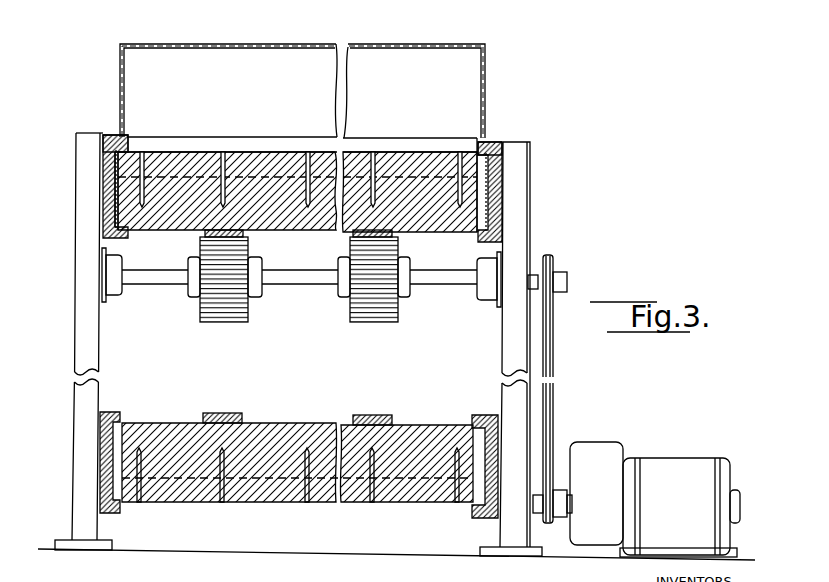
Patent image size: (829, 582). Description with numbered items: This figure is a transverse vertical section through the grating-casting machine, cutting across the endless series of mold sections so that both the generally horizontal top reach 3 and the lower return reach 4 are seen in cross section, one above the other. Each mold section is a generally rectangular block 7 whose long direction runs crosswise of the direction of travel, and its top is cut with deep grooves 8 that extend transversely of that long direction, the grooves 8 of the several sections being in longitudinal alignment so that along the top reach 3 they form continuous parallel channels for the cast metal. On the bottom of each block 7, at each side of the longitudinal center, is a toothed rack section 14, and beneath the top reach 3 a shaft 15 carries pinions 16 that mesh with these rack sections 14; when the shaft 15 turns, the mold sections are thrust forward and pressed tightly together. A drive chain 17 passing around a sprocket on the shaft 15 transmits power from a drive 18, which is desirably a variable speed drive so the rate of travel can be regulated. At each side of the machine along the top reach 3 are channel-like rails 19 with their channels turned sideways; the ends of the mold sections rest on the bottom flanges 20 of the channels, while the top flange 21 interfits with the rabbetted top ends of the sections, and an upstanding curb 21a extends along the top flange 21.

The top reach 3 is at (470, 187).
The return reach 4 is at (133, 440).
The block 7 is at (456, 225).
The grooves 8 is at (457, 170).
The toothed rack section 14 is at (247, 235).
The shaft 15 is at (298, 287).
The pinions 16 is at (223, 321).
The drive chain 17 is at (553, 402).
The drive 18 is at (598, 452).
The channel-like rails 19 is at (107, 205).
The bottom flanges 20 is at (128, 237).
The top flange 21 is at (117, 160).
The upstanding curb 21a is at (110, 142).